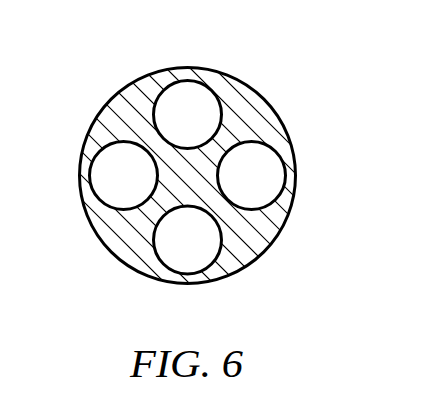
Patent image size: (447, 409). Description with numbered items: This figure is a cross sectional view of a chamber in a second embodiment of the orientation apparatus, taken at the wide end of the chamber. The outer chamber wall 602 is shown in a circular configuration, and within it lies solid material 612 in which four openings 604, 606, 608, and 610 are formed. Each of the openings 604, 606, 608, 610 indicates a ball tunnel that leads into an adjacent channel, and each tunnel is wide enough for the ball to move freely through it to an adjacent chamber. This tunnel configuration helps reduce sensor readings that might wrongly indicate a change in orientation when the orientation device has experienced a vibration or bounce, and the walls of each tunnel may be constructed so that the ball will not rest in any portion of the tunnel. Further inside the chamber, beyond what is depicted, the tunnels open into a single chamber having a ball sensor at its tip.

The outer chamber wall 602 is at (112, 94).
The opening 604 is at (106, 182).
The opening 606 is at (180, 262).
The opening 608 is at (264, 178).
The opening 610 is at (188, 94).
The solid material 612 is at (240, 125).